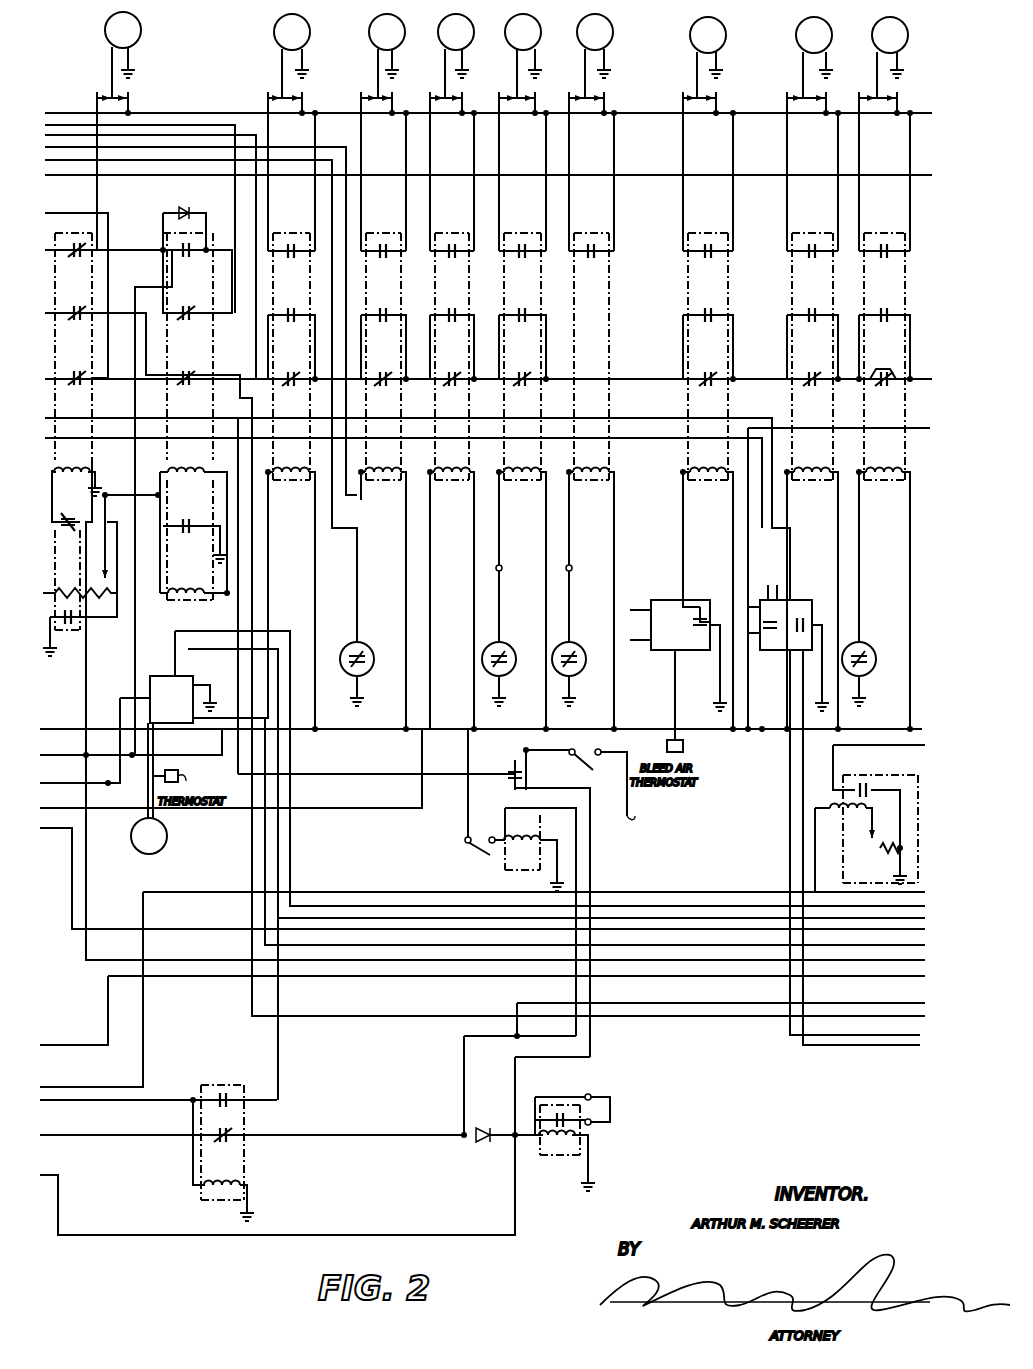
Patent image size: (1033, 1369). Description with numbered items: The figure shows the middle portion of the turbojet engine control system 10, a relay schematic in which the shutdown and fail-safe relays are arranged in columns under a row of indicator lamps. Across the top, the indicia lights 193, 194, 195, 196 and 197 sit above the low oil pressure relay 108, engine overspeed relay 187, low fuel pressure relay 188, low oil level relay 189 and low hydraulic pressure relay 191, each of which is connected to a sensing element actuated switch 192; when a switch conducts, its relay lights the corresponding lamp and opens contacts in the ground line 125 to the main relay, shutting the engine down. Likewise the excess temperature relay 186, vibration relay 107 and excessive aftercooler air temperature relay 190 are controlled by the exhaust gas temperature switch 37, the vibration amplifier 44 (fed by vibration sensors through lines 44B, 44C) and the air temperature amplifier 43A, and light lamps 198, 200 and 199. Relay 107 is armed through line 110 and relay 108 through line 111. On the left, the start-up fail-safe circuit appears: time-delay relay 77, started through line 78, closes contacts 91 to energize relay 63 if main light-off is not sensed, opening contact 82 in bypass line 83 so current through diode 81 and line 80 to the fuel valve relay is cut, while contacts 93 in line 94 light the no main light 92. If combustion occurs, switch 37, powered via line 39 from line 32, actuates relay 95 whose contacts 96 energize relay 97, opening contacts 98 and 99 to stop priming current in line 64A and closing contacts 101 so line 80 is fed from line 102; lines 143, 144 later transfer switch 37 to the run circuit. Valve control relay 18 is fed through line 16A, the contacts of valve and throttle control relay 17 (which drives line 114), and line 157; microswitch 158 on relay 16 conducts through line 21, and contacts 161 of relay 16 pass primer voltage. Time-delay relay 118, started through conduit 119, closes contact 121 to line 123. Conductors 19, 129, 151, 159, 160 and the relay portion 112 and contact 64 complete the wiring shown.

The control system 10 is at (165, 1247).
The relay 16 is at (505, 862).
The line 16A is at (582, 848).
The valve and throttle control relay 17 is at (236, 1077).
The valve control relay 18 is at (542, 1165).
The conductor 19 is at (590, 1057).
The line 21 is at (510, 1035).
The line 32 is at (78, 778).
The exhaust gas temperature switch 37 is at (153, 676).
The line 39 is at (120, 702).
The air temperature amplifier 43A is at (668, 585).
The vibration amplifier 44 is at (815, 597).
The line 44B is at (905, 1050).
The line 44C is at (760, 1030).
The relay 63 is at (60, 230).
The relay 64 is at (153, 228).
The line 64A is at (378, 762).
The time-delay relay 77 is at (75, 647).
The line 78 is at (47, 596).
The line 80 is at (108, 375).
The diode 81 is at (200, 212).
The normally closed contact 82 is at (80, 255).
The bypass line 83 is at (163, 234).
The normally open contacts 91 is at (80, 497).
The no main light 92 is at (105, 30).
The contacts 93 is at (60, 395).
The line 94 is at (95, 192).
The relay 95 is at (163, 572).
The normally open contacts 96 is at (190, 535).
The relay 97 is at (168, 416).
The normally closed contacts 98 is at (178, 390).
The normally closed contacts 99 is at (182, 322).
The normally open contacts 101 is at (183, 272).
The line 102 is at (135, 448).
The vibration relay 107 is at (824, 482).
The low oil pressure relay 108 is at (370, 488).
The line 110 is at (673, 418).
The line 111 is at (60, 145).
The capacitor 112 is at (233, 1103).
The line 114 is at (395, 965).
The time-delay relay 118 is at (864, 785).
The electrical conduit 119 is at (125, 1052).
The normally open contact 121 is at (835, 782).
The line 123 is at (865, 745).
The ground line 125 is at (195, 118).
The conductor 129 is at (80, 868).
The line 143 is at (293, 630).
The line 144 is at (290, 866).
The conductor 151 is at (90, 1025).
The line 157 is at (60, 1198).
The microswitch 158 is at (482, 855).
The conductor 159 is at (105, 765).
The capacitor 160 is at (535, 778).
The closed contacts 161 is at (497, 767).
The excess temperature relay 186 is at (278, 490).
The engine overspeed relay 187 is at (440, 490).
The low fuel pressure relay 188 is at (510, 490).
The low oil level relay 189 is at (580, 490).
The excessive aftercooler air temperature relay 190 is at (693, 490).
The low hydraulic pressure relay 191 is at (866, 490).
The sensing element actuated switches 192 is at (367, 635).
The indicia light 193 is at (375, 28).
The indicia light 194 is at (443, 30).
The indicia light 195 is at (511, 30).
The indicia light 196 is at (583, 30).
The indicia light 197 is at (872, 38).
The indicia light 198 is at (271, 32).
The indicia light 199 is at (691, 34).
The indicia light 200 is at (799, 34).